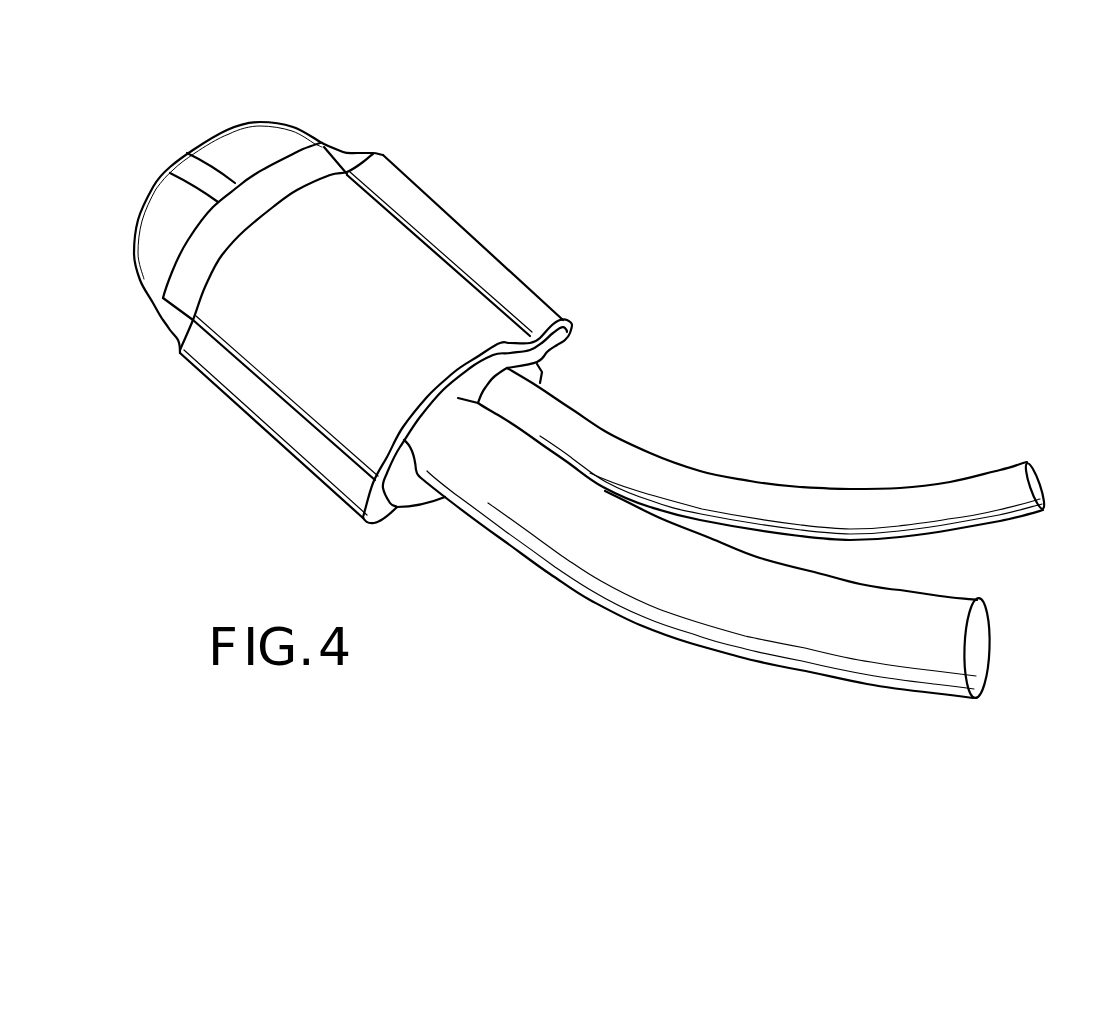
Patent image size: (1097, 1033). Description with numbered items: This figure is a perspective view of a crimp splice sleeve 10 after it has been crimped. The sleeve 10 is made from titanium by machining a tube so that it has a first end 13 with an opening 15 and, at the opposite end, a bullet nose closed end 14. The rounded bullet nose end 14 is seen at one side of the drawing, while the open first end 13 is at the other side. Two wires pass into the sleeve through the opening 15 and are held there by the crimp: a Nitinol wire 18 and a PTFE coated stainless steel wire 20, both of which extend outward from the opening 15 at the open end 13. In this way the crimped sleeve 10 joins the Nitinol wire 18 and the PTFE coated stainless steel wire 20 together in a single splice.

The crimp splice sleeve 10 is at (383, 237).
The first end 13 is at (404, 489).
The bullet nose closed end 14 is at (192, 126).
The opening 15 is at (565, 340).
The Nitinol wire 18 is at (655, 463).
The PTFE coated stainless steel wire 20 is at (670, 583).